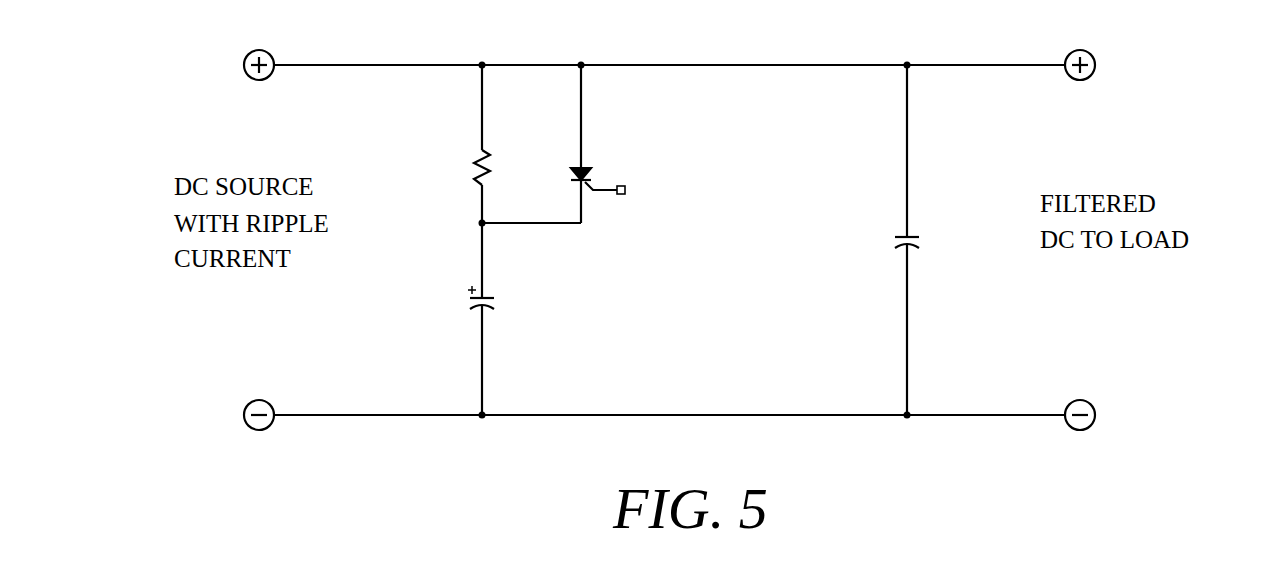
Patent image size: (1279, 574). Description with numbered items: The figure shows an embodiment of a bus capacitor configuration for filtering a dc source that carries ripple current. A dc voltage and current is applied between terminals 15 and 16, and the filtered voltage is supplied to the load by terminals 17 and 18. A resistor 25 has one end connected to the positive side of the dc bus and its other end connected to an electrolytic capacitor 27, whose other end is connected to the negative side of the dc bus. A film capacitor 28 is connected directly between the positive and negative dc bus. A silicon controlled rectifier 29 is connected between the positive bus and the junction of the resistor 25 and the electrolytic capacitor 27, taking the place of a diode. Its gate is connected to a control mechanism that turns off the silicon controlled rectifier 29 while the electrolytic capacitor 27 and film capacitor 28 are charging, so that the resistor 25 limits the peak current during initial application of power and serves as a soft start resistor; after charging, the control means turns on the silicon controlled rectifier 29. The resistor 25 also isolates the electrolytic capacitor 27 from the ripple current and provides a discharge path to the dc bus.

The terminal 15 is at (270, 55).
The terminal 16 is at (272, 405).
The terminal 17 is at (1093, 55).
The terminal 18 is at (1093, 405).
The resistor 25 is at (489, 152).
The electrolytic capacitor 27 is at (488, 296).
The film capacitor 28 is at (912, 235).
The silicon controlled rectifier 29 is at (590, 170).